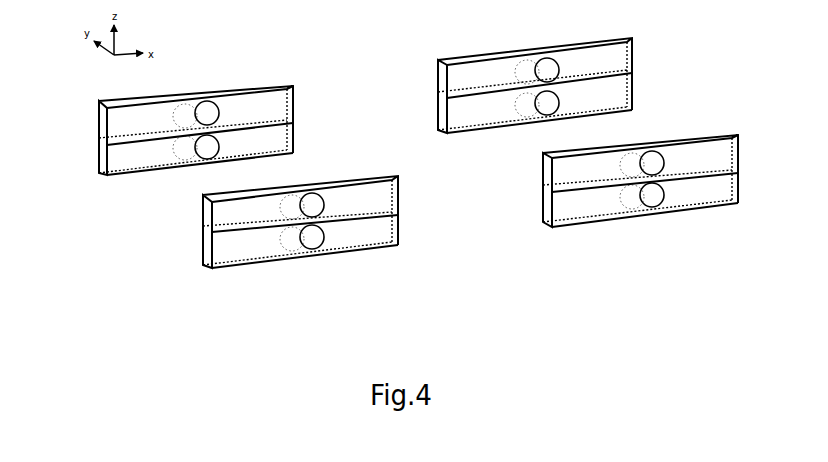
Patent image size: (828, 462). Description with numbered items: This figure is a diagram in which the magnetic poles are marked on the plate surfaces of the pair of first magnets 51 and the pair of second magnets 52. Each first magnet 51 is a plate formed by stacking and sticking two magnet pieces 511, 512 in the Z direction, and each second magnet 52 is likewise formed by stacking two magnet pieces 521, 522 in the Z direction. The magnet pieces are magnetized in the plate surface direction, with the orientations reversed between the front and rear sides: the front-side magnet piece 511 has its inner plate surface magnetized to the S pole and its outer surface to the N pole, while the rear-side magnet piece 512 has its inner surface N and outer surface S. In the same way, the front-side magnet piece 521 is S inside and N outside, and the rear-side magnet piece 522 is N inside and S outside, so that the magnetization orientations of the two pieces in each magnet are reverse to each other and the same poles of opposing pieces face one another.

The first magnet 51 is at (52, 118).
The magnet piece 511 is at (205, 219).
The magnet piece 512 is at (205, 250).
The second magnet 52 is at (681, 62).
The magnet piece 521 is at (760, 160).
The magnet piece 522 is at (760, 190).